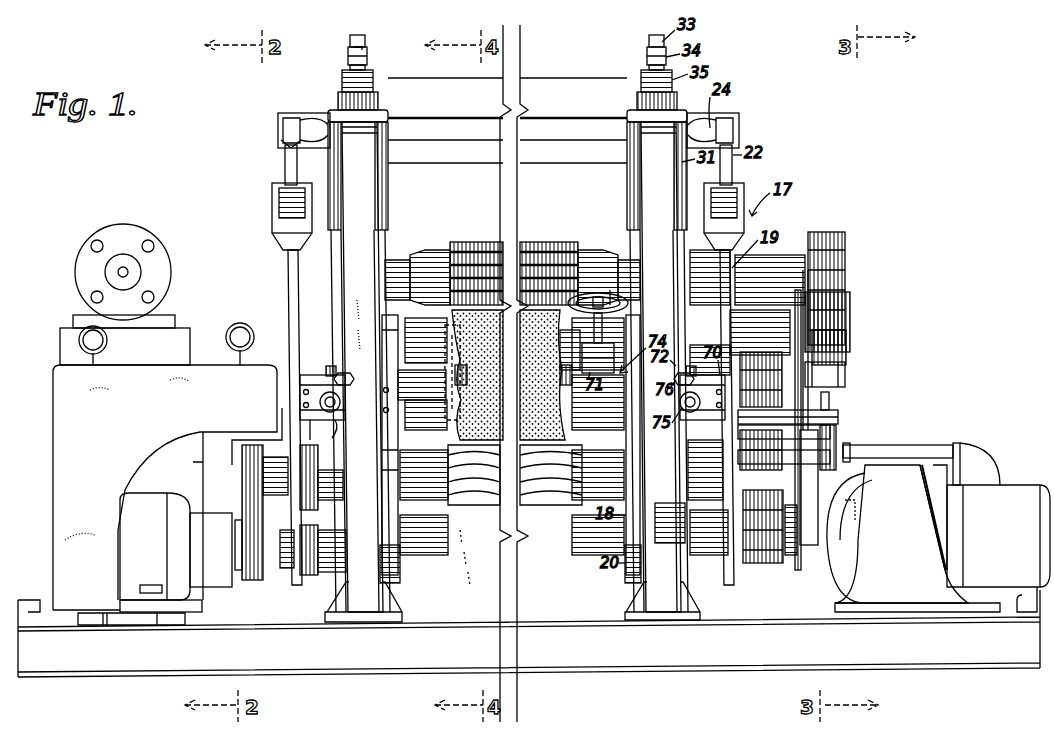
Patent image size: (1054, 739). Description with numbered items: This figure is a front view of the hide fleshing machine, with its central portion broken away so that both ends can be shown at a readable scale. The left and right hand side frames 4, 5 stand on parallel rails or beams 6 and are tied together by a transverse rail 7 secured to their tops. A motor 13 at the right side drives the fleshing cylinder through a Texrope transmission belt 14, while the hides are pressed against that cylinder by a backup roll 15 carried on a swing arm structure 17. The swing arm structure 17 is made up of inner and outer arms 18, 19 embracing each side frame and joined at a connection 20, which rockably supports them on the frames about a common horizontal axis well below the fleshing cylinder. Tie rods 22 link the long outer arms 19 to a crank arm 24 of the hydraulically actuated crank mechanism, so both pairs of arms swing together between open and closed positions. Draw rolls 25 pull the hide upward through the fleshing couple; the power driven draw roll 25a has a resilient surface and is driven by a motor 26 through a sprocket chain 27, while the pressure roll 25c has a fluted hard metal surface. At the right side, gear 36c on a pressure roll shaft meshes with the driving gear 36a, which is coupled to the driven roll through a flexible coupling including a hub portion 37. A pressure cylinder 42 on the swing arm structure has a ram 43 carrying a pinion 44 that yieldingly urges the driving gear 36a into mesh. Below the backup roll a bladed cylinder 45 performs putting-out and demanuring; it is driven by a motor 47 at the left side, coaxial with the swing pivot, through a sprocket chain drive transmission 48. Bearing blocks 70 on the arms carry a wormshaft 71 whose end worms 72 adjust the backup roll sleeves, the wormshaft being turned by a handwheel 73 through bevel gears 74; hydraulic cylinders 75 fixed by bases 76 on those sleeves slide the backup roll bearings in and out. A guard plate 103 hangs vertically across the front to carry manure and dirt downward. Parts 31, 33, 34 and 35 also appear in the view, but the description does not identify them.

The left hand side frame 4 is at (362, 255).
The right hand side frame 5 is at (660, 267).
The parallel rails or beams 6 is at (718, 625).
The transverse rail 7 is at (456, 103).
The motor 13 is at (906, 457).
The Texrope transmission belt 14 is at (752, 560).
The backup roll 15 is at (452, 436).
The swing arm structure 17 is at (279, 263).
The inner arm 18 is at (398, 515).
The outer arm 19 is at (288, 293).
The connection 20 is at (400, 552).
The tie rods 22 is at (284, 157).
The crank arm 24 is at (314, 128).
The draw rolls 25 is at (495, 226).
The power driven draw roll 25a is at (533, 243).
The pressure roll 25c is at (462, 255).
The motor 26 is at (906, 527).
The sprocket chain 27 is at (805, 436).
The guide bar 31 is at (382, 190).
The nut 33 is at (365, 42).
The nut 34 is at (367, 57).
The threaded sleeve 35 is at (373, 80).
The driving gear 36a is at (848, 342).
The pressure roll gear 36c is at (827, 240).
The hub portion 37 is at (850, 308).
The pressure cylinder 42 is at (840, 445).
The ram 43 is at (830, 401).
The pinion 44 is at (846, 371).
The bladed cylinder 45 is at (468, 508).
The motor 47 is at (150, 556).
The sprocket chain drive transmission 48 is at (238, 500).
The bearing blocks 70 is at (302, 375).
The wormshaft 71 is at (320, 372).
The worms 72 is at (337, 366).
The handwheel 73 is at (618, 305).
The bevel gears 74 is at (587, 343).
The hydraulic cylinders 75 is at (340, 402).
The bases 76 is at (338, 430).
The guard plate 103 is at (458, 540).